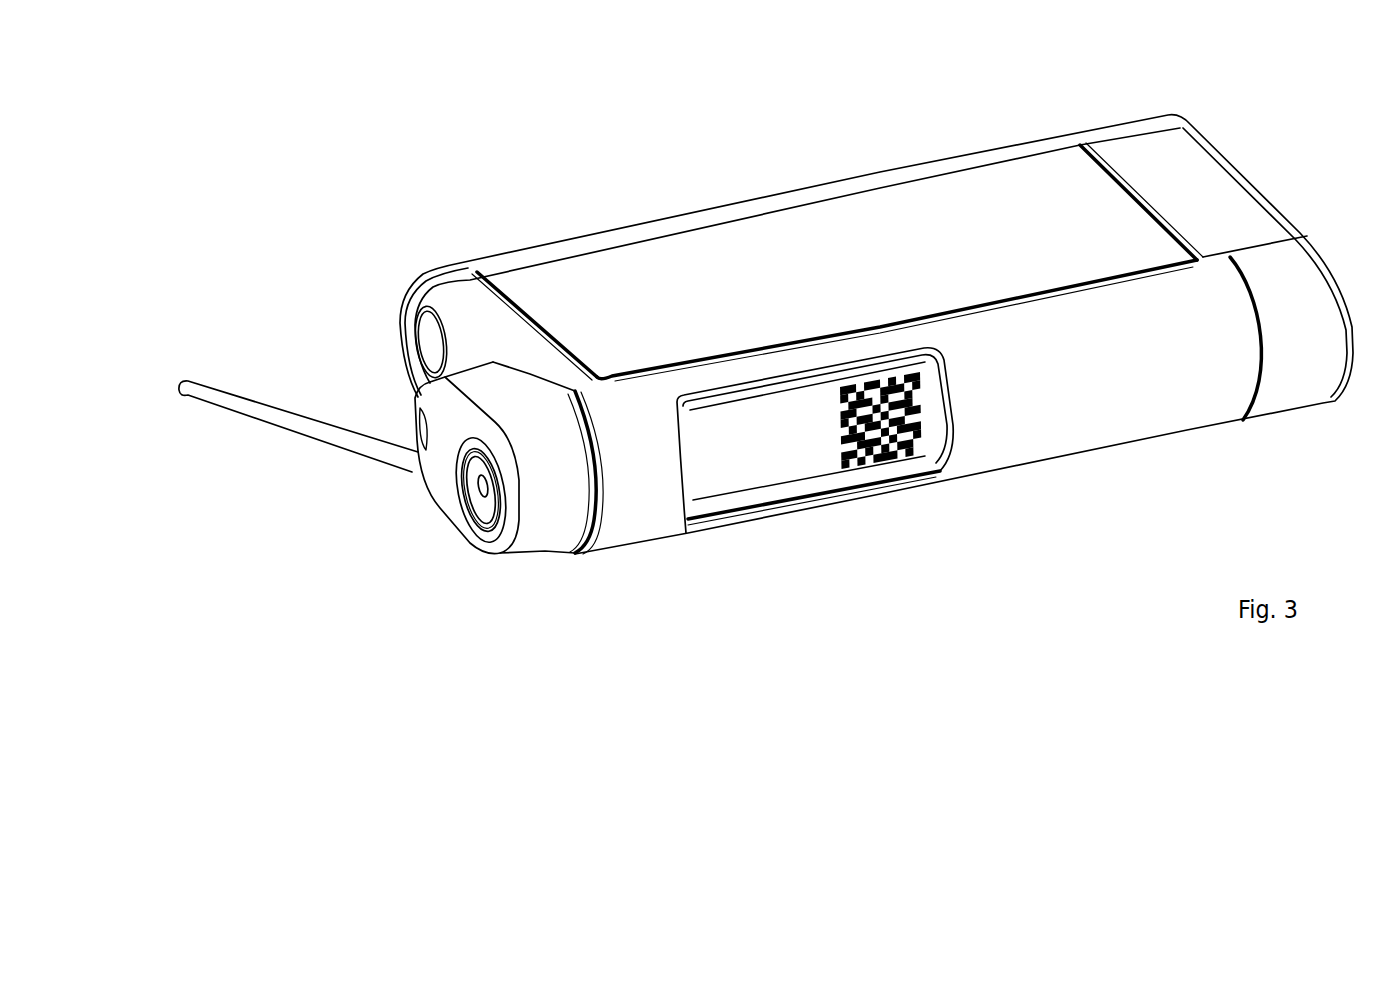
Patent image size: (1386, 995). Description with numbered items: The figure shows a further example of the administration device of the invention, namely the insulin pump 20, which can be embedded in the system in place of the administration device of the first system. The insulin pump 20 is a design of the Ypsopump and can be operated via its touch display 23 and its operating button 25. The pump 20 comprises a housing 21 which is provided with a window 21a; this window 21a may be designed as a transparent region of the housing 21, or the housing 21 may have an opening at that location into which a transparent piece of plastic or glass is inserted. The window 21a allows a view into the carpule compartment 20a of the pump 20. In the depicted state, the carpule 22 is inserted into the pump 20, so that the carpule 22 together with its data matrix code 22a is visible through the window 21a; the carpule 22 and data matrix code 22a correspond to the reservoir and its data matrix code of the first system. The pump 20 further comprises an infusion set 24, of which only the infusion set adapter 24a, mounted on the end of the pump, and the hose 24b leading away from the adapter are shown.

The insulin pump 20 is at (766, 347).
The carpule compartment 20a is at (708, 510).
The housing 21 is at (1112, 380).
The window 21a is at (777, 403).
The carpule 22 is at (757, 463).
The data matrix code 22a is at (912, 452).
The touch display 23 is at (960, 214).
The infusion set 24 is at (393, 455).
The infusion set adapter 24a is at (550, 507).
The hose 24b is at (257, 410).
The operating button 25 is at (437, 353).